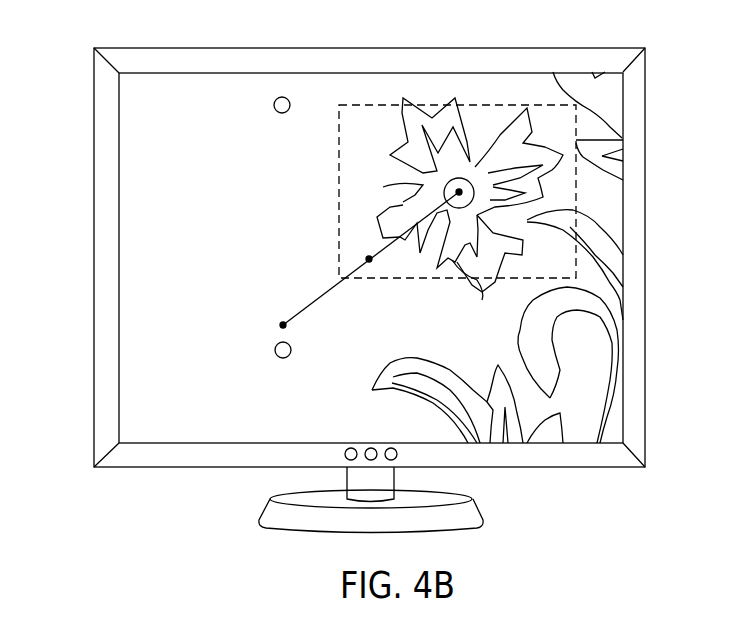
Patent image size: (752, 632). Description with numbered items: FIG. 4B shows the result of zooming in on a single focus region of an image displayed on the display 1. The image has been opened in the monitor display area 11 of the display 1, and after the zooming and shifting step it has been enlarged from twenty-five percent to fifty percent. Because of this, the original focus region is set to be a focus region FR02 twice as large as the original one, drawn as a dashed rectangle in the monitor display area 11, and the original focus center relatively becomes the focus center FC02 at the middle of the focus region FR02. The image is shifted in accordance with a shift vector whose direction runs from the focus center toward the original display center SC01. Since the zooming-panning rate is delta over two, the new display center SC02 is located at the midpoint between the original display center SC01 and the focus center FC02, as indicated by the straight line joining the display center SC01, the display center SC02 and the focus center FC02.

The display 1 is at (645, 78).
The monitor display area 11 is at (128, 217).
The focus region FR02 is at (340, 180).
The focus center FC02 is at (403, 205).
The display center SC01 is at (345, 261).
The display center SC02 is at (369, 259).